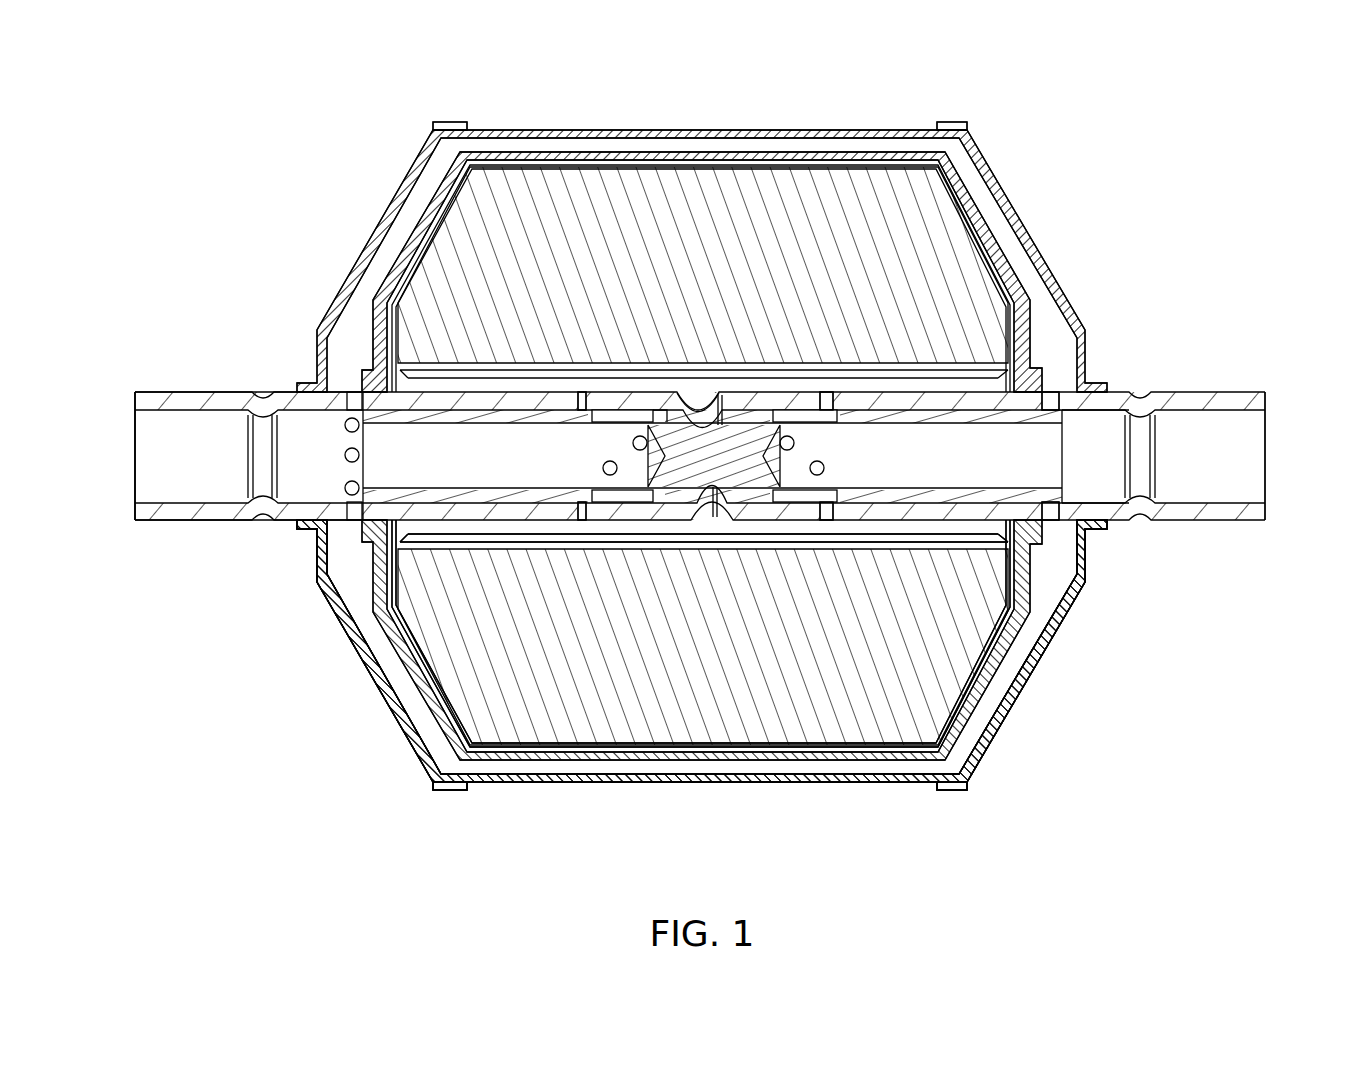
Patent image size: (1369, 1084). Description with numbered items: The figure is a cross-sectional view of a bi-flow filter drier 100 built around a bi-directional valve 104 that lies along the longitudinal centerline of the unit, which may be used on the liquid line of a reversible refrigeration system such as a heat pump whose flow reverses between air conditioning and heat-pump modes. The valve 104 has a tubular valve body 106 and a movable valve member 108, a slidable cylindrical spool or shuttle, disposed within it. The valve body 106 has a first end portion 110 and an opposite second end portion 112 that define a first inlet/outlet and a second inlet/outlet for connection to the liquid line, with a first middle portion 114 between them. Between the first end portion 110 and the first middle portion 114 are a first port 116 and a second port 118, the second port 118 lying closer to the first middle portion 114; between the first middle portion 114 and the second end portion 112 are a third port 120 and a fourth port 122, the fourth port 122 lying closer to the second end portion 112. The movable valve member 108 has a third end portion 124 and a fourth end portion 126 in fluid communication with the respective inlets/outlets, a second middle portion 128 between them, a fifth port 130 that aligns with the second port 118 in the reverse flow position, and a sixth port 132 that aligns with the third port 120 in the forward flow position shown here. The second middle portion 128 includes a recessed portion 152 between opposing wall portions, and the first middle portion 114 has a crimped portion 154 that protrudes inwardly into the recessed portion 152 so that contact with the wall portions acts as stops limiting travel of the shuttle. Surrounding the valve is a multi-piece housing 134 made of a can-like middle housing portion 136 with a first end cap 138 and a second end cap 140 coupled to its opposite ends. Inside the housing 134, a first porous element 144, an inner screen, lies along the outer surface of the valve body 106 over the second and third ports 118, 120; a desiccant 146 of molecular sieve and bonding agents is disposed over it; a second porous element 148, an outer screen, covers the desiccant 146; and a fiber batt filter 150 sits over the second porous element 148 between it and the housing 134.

The bi-flow filter drier 100 is at (226, 84).
The bi-directional valve 104 is at (730, 512).
The valve body 106 is at (176, 392).
The movable valve member 108 is at (388, 502).
The first end portion 110 is at (134, 449).
The second end portion 112 is at (1268, 453).
The first middle portion 114 is at (610, 458).
The first port 116 is at (355, 392).
The second port 118 is at (548, 380).
The third port 120 is at (757, 435).
The fourth port 122 is at (1049, 393).
The third end portion 124 is at (358, 472).
The fourth end portion 126 is at (1063, 455).
The second middle portion 128 is at (735, 410).
The fifth port 130 is at (580, 395).
The sixth port 132 is at (822, 410).
The housing 134 is at (393, 718).
The middle housing portion 136 is at (478, 788).
The first end cap 138 is at (357, 652).
The second end cap 140 is at (1032, 680).
The first porous element 144 is at (600, 535).
The desiccant 146 is at (660, 732).
The second porous element 148 is at (712, 758).
The filter 150 is at (775, 770).
The recessed portion 152 is at (700, 396).
The crimped portion 154 is at (667, 407).